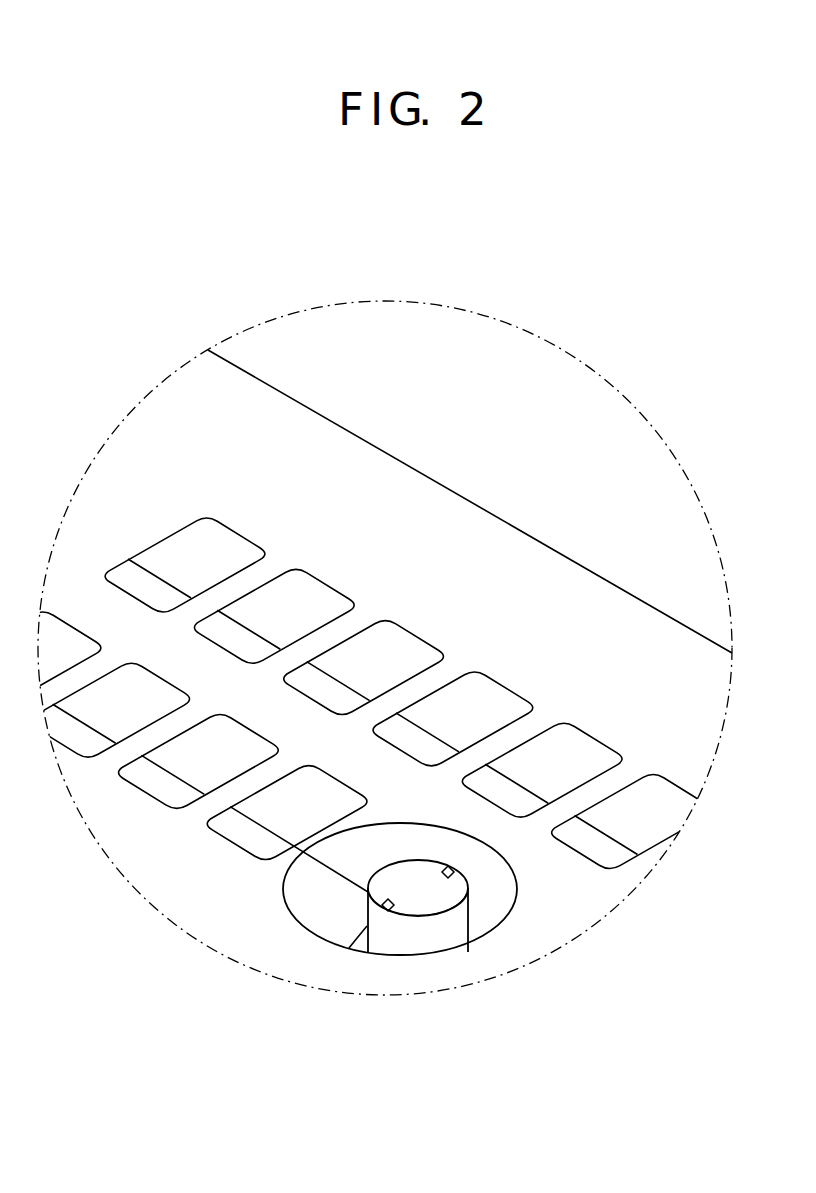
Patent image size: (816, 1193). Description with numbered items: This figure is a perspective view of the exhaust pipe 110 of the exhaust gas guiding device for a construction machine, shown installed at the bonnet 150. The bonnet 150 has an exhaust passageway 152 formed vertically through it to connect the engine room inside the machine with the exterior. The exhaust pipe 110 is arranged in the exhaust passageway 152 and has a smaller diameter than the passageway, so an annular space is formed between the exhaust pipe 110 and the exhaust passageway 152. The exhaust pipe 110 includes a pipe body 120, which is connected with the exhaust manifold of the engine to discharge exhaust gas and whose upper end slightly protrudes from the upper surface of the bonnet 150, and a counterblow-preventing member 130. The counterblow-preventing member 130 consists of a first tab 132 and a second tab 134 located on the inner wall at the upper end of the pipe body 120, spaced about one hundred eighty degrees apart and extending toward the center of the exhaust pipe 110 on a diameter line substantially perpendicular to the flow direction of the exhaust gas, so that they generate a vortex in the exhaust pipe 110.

The exhaust pipe 110 is at (487, 907).
The pipe body 120 is at (414, 860).
The counterblow-preventing member 130 is at (417, 990).
The first tab 132 is at (388, 905).
The second tab 134 is at (447, 872).
The bonnet 150 is at (568, 908).
The exhaust passageway 152 is at (305, 902).